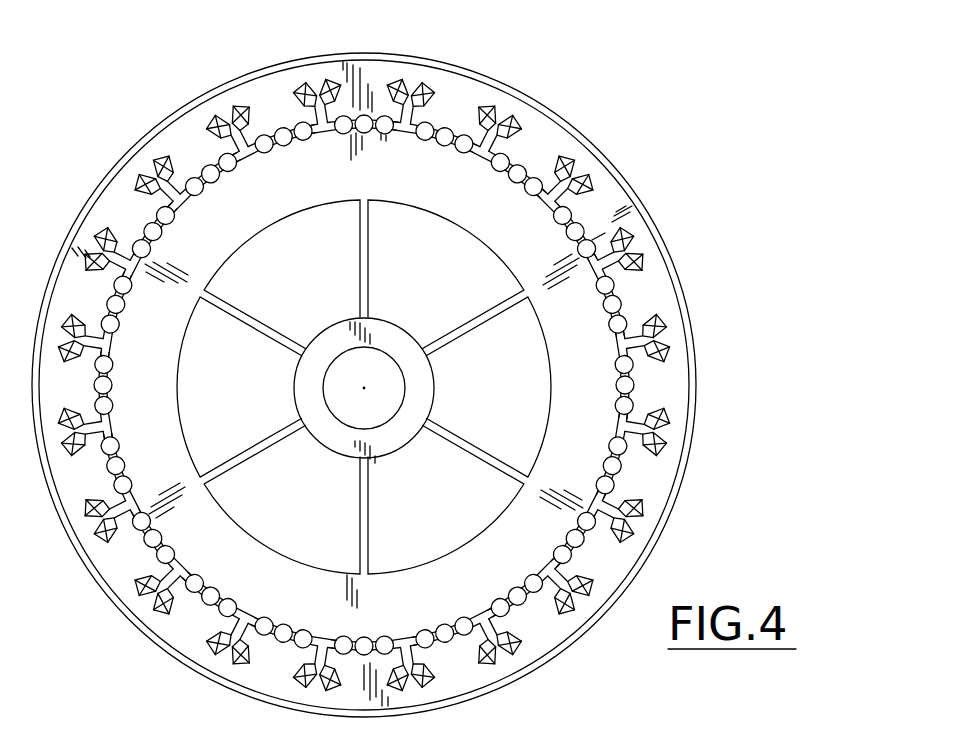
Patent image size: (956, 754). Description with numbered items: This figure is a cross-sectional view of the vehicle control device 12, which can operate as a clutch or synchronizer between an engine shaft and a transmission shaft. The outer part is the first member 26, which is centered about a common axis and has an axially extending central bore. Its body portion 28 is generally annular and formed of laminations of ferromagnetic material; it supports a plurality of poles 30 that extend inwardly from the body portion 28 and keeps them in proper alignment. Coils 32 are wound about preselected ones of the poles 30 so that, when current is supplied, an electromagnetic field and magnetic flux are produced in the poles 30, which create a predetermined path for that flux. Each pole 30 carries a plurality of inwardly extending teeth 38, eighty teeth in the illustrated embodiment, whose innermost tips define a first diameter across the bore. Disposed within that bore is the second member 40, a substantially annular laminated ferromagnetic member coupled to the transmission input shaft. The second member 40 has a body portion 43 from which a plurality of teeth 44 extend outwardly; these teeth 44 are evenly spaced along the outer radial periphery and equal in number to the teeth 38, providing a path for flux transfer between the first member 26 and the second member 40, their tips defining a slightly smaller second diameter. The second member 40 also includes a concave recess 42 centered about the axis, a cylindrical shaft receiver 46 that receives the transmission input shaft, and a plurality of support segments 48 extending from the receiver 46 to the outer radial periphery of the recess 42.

The control device 12 is at (379, 372).
The first member 26 is at (544, 147).
The body portion 28 is at (589, 163).
The poles 30 is at (613, 210).
The coils 32 is at (611, 254).
The teeth 38 is at (435, 332).
The second member 40 is at (604, 385).
The concave recess 42 is at (340, 387).
The body portion 43 is at (594, 332).
The teeth 44 is at (405, 385).
The shaft receiver 46 is at (420, 390).
The support segments 48 is at (446, 500).